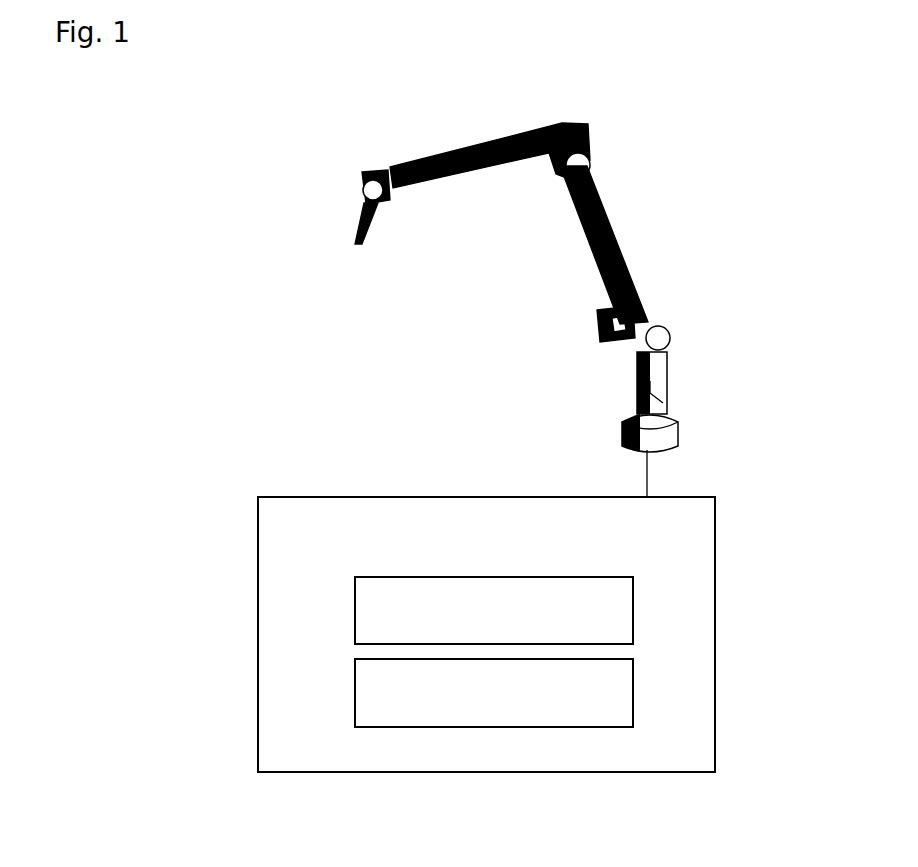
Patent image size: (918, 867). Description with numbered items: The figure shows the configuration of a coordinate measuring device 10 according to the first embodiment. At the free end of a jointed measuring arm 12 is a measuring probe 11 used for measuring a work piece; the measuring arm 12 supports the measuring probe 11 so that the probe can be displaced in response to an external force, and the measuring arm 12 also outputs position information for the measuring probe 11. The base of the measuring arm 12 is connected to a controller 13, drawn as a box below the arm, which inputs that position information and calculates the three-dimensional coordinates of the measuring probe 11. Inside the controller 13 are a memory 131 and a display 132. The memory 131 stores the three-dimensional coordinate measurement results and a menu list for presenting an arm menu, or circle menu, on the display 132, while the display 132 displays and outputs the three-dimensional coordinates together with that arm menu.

The coordinate measuring device 10 is at (648, 127).
The measuring probe 11 is at (352, 218).
The measuring arm 12 is at (607, 240).
The controller 13 is at (305, 498).
The memory 131 is at (633, 609).
The display 132 is at (633, 690).